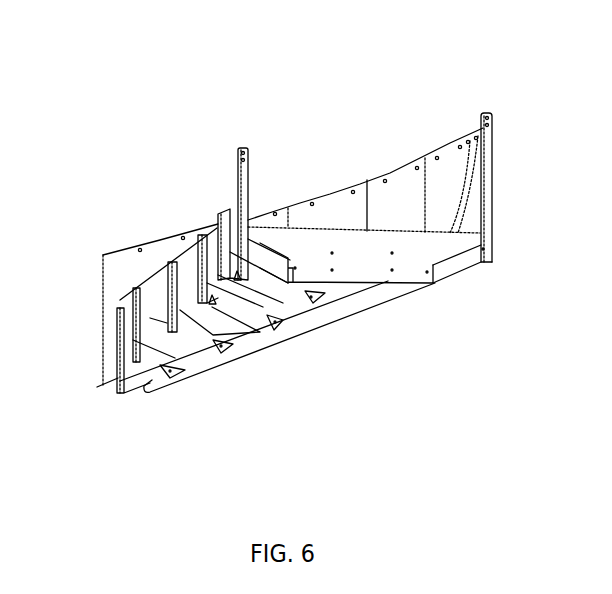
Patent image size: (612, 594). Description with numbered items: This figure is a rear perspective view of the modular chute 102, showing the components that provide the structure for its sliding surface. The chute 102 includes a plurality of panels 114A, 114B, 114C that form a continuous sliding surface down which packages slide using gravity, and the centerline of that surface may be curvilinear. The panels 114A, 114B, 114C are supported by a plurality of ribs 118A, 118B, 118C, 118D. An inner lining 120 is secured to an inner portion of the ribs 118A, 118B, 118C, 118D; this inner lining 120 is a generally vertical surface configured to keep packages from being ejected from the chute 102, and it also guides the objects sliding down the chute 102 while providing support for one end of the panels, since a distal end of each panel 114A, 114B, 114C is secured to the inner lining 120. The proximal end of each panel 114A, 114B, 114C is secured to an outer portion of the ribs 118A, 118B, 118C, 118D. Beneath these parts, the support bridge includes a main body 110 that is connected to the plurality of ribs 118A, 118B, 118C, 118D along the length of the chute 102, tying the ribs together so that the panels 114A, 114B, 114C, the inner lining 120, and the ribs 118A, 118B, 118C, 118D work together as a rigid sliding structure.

The modular chute 102 is at (217, 66).
The main body 110 is at (247, 350).
The panel 114A is at (472, 127).
The panel 114B is at (443, 150).
The panel 114C is at (158, 248).
The rib 118A is at (493, 262).
The rib 118B is at (235, 187).
The rib 118C is at (280, 328).
The rib 118D is at (117, 393).
The inner lining 120 is at (153, 292).